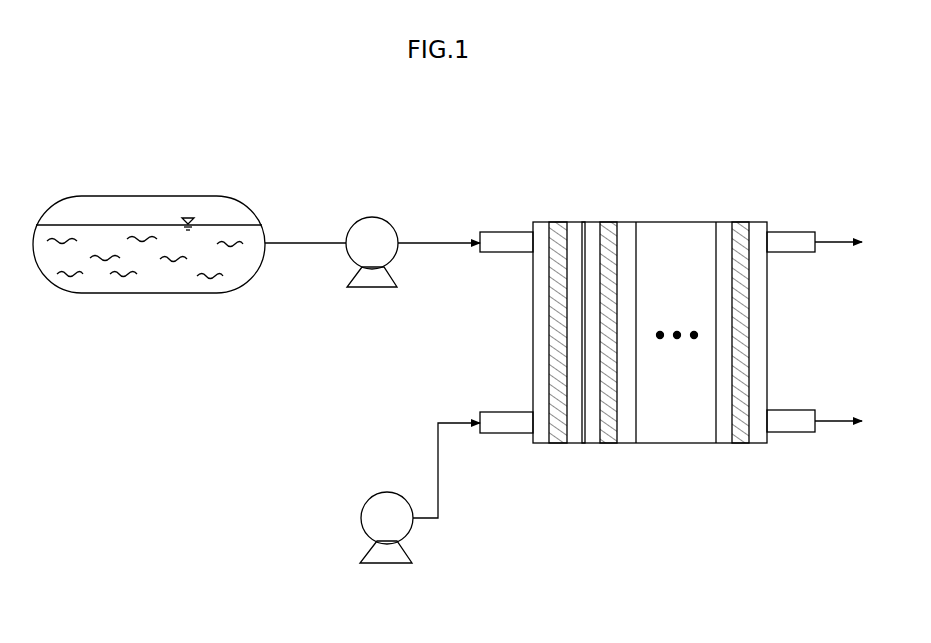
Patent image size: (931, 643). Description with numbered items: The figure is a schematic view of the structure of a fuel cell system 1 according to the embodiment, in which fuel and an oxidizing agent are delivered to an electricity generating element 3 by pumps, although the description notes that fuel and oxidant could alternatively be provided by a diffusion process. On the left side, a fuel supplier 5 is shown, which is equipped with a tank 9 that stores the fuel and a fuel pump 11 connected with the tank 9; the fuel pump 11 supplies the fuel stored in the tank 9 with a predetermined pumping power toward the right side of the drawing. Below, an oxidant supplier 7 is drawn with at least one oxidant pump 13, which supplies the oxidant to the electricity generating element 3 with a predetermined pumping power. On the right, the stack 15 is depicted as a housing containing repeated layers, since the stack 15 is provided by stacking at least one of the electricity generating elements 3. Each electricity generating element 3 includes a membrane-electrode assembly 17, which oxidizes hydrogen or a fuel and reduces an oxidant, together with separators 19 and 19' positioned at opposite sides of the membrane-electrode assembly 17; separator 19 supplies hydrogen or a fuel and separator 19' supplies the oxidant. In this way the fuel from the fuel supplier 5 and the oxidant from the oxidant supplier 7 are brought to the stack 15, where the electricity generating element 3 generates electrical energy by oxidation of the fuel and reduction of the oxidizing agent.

The fuel cell system 1 is at (772, 132).
The electricity generating element 3 is at (603, 372).
The fuel supplier 5 is at (61, 182).
The oxidant supplier 7 is at (381, 494).
The tank 9 is at (165, 196).
The fuel pump 11 is at (370, 217).
The oxidant pump 13 is at (360, 508).
The stack 15 is at (650, 336).
The membrane-electrode assembly 17 is at (613, 444).
The separator 19 is at (571, 362).
The separator 19' is at (625, 362).